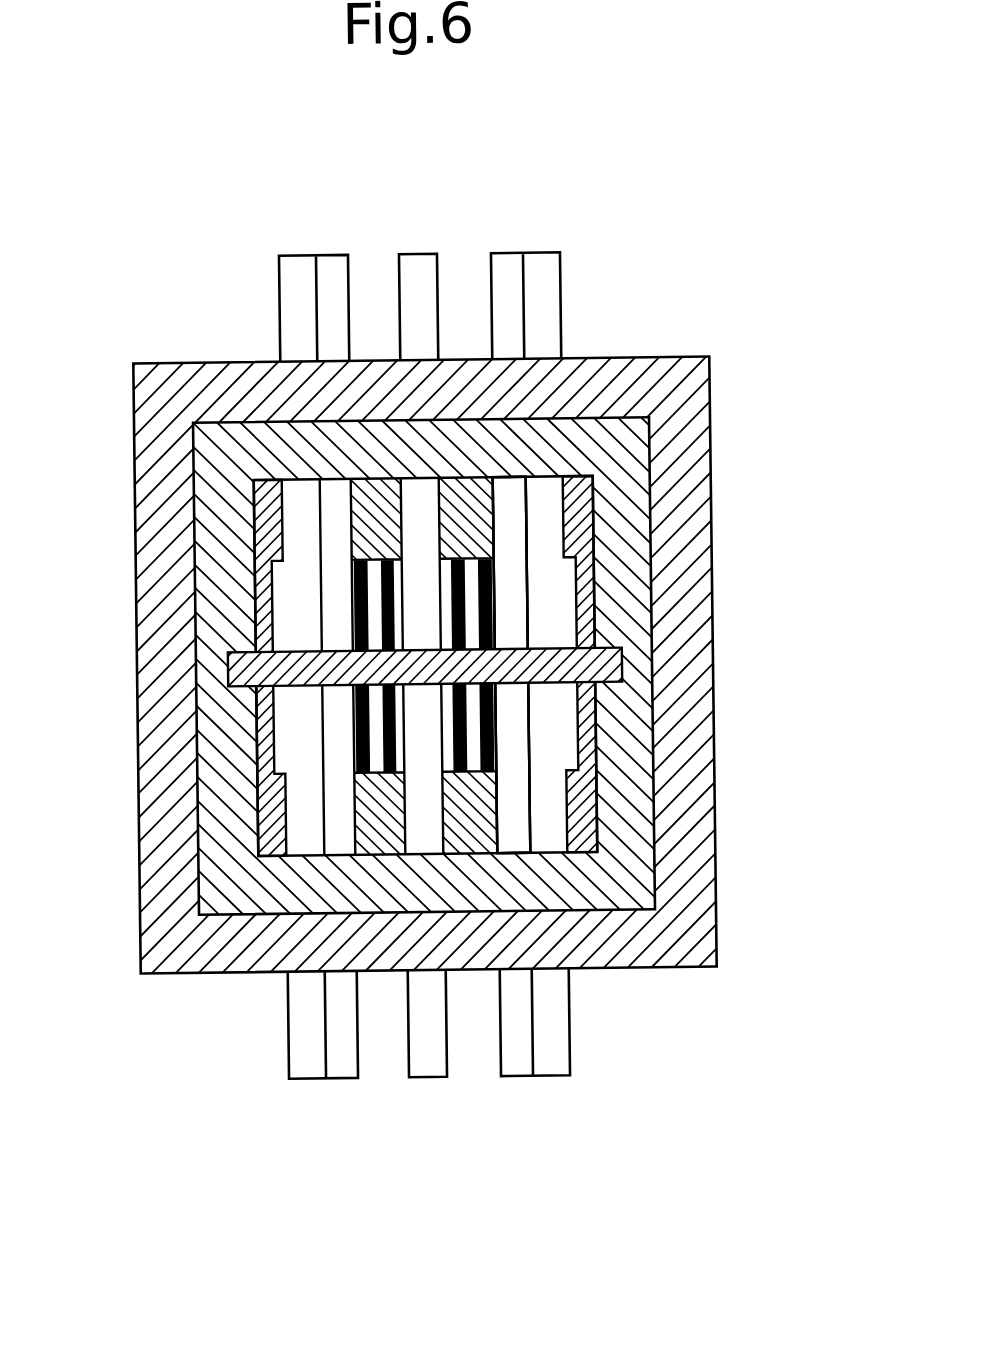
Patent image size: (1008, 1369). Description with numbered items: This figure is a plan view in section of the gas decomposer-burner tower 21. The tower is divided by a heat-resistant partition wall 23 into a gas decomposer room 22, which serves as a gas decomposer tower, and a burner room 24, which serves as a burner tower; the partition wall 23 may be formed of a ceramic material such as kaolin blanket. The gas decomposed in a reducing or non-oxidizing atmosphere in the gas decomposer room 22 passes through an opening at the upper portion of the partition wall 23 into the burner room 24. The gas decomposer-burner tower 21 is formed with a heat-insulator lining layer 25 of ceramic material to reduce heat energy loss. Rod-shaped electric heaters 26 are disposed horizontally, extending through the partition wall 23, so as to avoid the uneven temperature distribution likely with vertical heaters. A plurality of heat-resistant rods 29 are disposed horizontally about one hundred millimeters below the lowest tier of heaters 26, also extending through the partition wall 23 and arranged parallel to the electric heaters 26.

The gas decomposer-burner tower 21 is at (142, 1032).
The gas decomposer room 22 is at (514, 496).
The partition wall 23 is at (622, 649).
The burner room 24 is at (515, 814).
The heat-insulator lining layer 25 is at (684, 571).
The electric heaters 26 is at (423, 1059).
The heat-resistant rods 29 is at (464, 588).